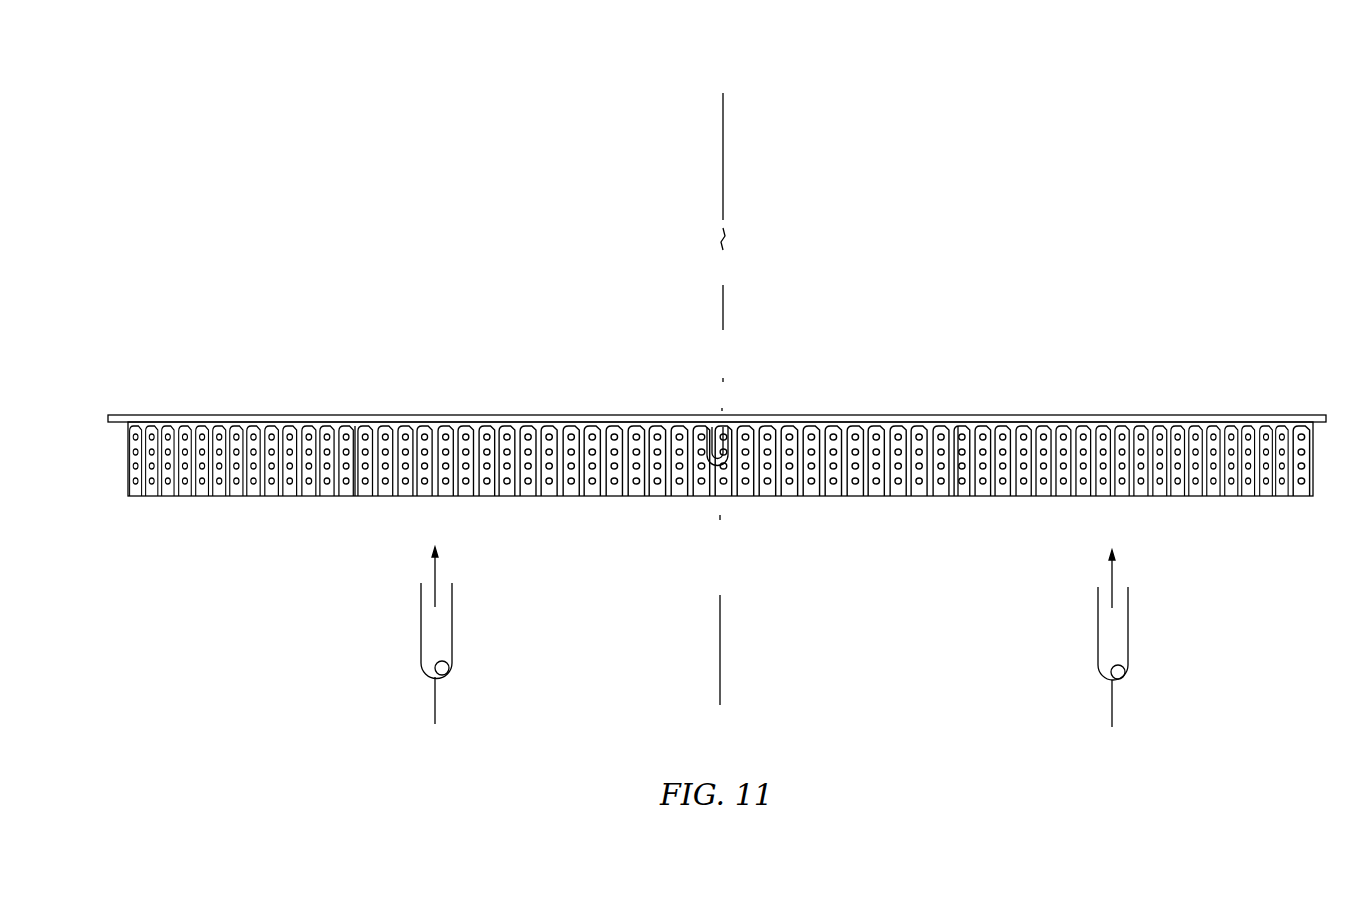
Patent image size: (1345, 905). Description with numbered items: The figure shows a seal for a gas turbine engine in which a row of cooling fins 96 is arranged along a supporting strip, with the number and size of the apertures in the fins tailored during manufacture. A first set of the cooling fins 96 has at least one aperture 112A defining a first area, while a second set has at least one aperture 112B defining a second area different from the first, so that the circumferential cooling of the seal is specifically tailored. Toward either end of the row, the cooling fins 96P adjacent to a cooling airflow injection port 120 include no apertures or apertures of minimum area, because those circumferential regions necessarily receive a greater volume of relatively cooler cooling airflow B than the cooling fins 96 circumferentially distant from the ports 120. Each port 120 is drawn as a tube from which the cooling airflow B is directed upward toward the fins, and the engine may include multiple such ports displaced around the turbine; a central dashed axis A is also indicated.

The cooling fins 96 is at (580, 528).
The cooling fins adjacent to cooling airflow injection port 96P is at (580, 393).
The aperture 112A is at (680, 440).
The aperture 112B is at (355, 497).
The cooling airflow injection port 120 is at (453, 640).
The axis A is at (722, 665).
The cooling airflow B is at (435, 700).